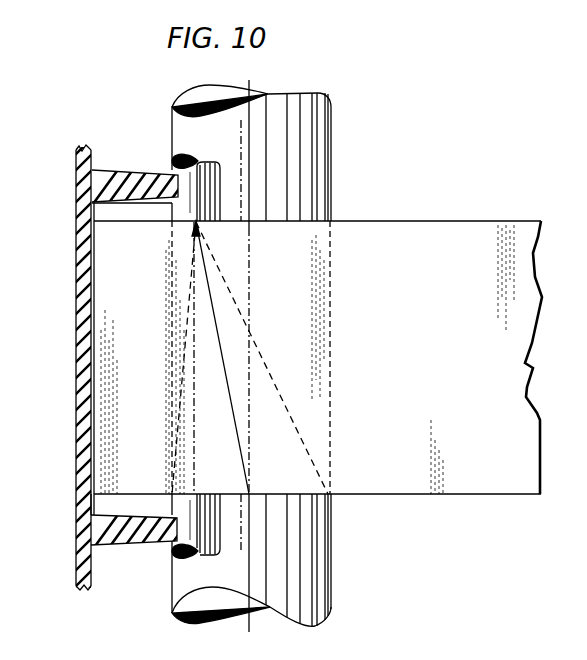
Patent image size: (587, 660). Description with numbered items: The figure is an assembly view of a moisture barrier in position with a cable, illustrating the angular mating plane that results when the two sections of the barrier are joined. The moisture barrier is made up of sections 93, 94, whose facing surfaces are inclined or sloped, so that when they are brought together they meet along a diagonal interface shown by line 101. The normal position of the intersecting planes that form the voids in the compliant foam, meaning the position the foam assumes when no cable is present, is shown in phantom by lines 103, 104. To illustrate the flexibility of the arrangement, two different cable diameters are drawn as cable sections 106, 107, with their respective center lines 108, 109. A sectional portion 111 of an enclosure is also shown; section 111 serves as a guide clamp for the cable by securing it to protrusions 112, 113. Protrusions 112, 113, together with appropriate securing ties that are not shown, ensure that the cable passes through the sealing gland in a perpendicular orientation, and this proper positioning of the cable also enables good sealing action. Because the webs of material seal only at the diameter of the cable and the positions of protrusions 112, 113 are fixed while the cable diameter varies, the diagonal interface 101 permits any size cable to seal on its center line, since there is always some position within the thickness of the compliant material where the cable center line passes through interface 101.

The section 93 is at (150, 360).
The section 94 is at (418, 365).
The line 101 is at (237, 435).
The line 103 is at (190, 278).
The line 104 is at (258, 348).
The cable section 106 is at (215, 181).
The cable section 107 is at (313, 128).
The center line 108 is at (197, 158).
The center line 109 is at (250, 86).
The sectional portion of an enclosure 111 is at (76, 390).
The protrusion 112 is at (118, 177).
The protrusion 113 is at (139, 537).